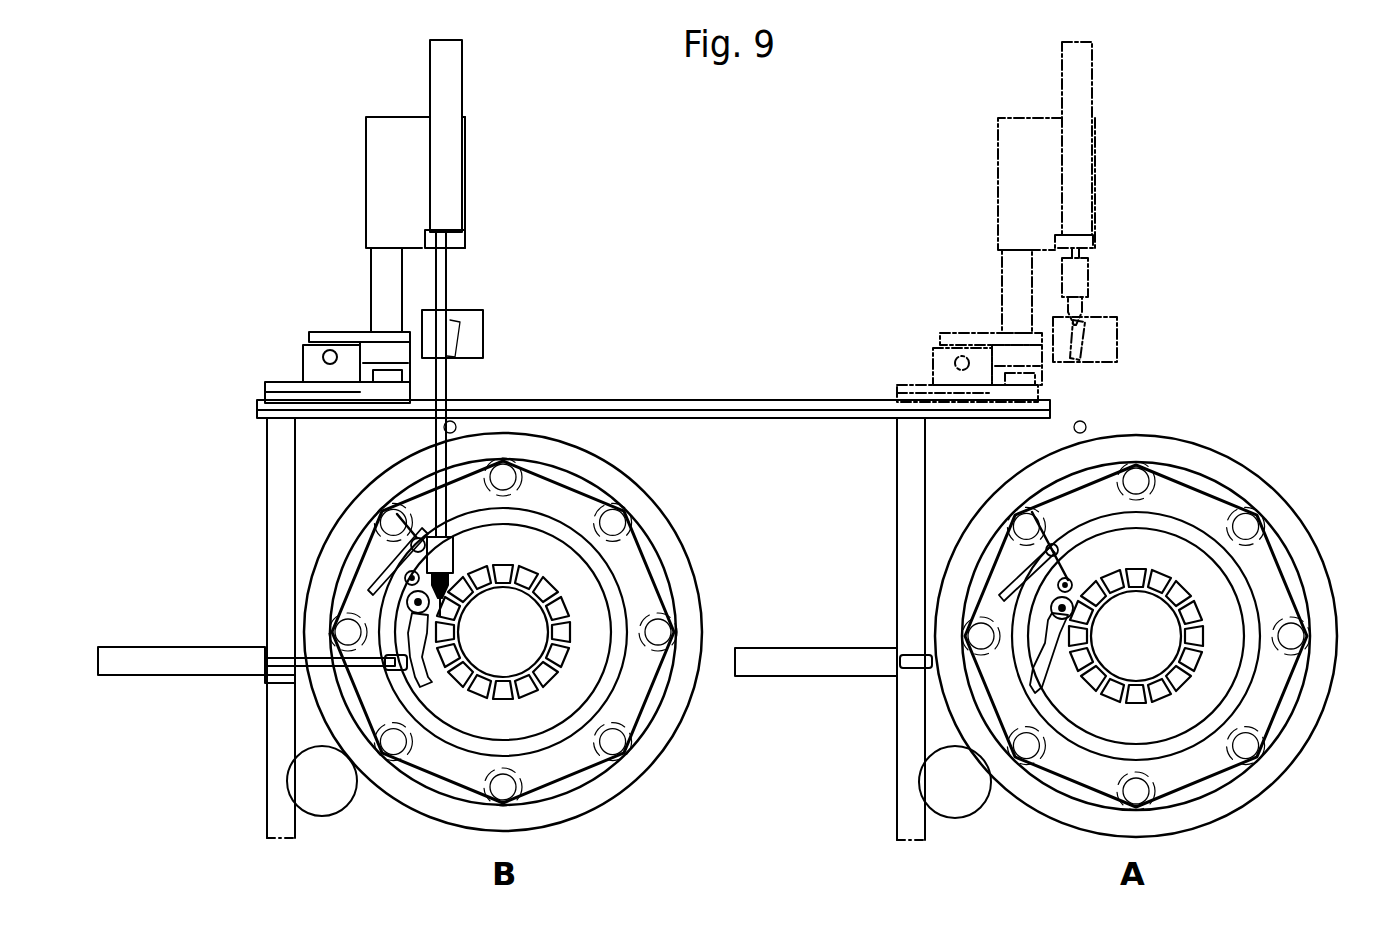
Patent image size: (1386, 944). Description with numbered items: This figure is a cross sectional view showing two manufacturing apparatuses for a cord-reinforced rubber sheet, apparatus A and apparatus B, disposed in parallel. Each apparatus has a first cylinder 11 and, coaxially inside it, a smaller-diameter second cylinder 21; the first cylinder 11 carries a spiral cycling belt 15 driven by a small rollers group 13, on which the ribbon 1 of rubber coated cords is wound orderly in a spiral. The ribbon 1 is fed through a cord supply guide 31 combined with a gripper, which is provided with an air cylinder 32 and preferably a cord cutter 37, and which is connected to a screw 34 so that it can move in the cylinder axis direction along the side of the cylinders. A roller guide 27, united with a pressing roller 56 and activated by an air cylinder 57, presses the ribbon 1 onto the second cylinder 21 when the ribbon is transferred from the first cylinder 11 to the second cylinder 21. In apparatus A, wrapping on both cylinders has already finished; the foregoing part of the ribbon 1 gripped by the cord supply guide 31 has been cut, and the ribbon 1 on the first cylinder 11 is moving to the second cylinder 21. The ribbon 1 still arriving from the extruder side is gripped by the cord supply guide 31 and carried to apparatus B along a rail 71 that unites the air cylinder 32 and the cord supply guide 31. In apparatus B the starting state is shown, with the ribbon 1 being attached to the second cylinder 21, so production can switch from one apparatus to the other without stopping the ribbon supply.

The ribbon 1 is at (425, 678).
The first cylinder 11 is at (613, 563).
The small rollers group 13 is at (582, 752).
The spiral cycling belt 15 is at (427, 767).
The second cylinder 21 is at (520, 645).
The roller guide 27 is at (375, 593).
The cord supply guide 31 is at (457, 567).
The air cylinder 32 is at (465, 137).
The screw 34 is at (302, 357).
The cord cutter 37 is at (462, 320).
The pressing roller 56 is at (400, 604).
The air cylinder 57 is at (142, 672).
The rail 71 is at (752, 400).